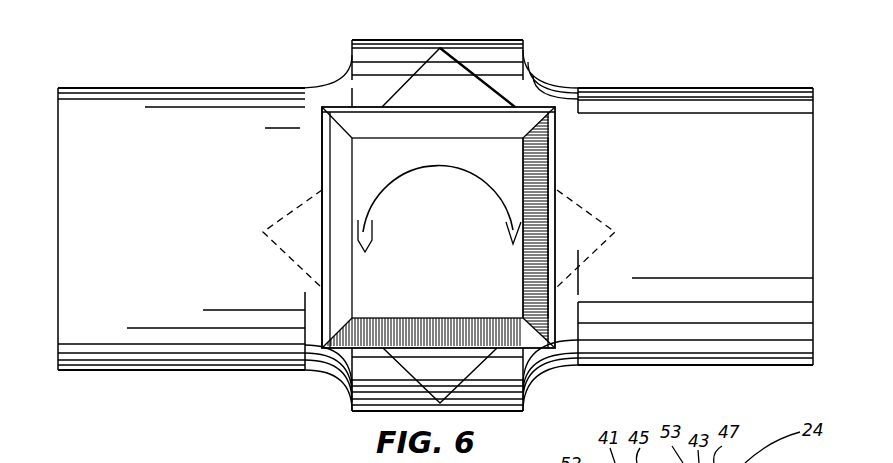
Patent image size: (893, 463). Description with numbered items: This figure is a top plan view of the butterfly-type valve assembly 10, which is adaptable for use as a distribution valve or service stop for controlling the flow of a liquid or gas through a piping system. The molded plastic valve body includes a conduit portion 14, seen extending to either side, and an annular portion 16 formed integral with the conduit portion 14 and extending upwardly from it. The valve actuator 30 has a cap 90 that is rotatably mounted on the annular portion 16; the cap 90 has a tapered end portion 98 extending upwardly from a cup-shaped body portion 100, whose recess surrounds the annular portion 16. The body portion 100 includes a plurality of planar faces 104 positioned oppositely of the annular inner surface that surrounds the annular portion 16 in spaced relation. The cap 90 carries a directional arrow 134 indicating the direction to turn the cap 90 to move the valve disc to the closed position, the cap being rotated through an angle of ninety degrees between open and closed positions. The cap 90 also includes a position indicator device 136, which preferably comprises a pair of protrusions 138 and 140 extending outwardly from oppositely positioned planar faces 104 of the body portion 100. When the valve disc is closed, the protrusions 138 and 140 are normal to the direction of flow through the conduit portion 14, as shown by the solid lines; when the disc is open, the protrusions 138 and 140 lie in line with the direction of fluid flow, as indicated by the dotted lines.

The valve assembly 10 is at (254, 47).
The conduit portion 14 is at (165, 350).
The annular portion 16 is at (320, 372).
The valve actuator 30 is at (566, 135).
The cap 90 is at (333, 152).
The tapered end portion 98 is at (545, 175).
The cup-shaped body portion 100 is at (558, 215).
The planar faces 104 is at (525, 95).
The directional arrow 134 is at (413, 163).
The position indicator device 136 is at (388, 93).
The protrusion 138 is at (440, 62).
The protrusion 140 is at (592, 252).